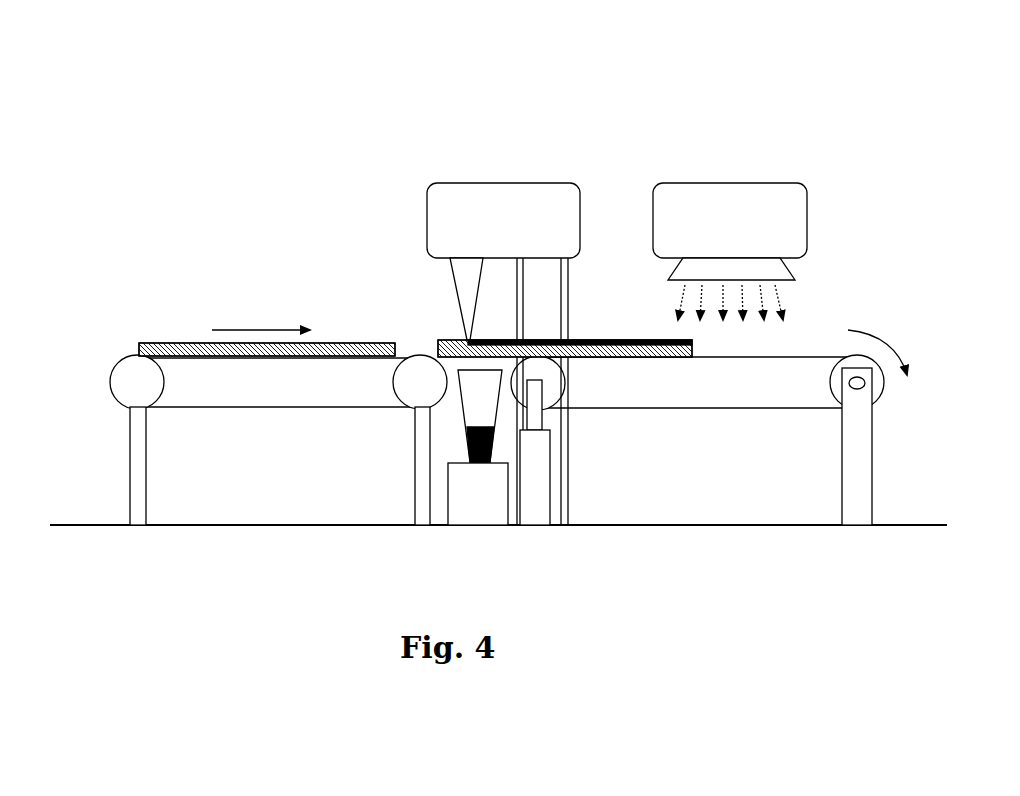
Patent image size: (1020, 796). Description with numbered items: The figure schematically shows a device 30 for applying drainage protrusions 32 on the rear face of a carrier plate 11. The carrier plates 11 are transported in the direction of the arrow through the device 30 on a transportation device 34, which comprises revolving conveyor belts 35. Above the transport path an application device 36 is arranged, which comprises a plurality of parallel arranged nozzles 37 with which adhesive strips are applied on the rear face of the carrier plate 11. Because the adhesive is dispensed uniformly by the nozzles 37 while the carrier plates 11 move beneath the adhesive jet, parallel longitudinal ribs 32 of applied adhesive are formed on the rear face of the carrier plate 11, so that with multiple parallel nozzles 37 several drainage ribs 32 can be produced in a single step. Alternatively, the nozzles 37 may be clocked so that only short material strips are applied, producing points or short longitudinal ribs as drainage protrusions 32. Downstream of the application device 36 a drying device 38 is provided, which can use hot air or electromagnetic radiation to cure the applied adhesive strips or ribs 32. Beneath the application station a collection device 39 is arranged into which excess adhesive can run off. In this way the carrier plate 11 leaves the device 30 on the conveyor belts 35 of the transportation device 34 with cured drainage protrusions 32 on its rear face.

The device 30 is at (257, 166).
The carrier plate 11 is at (192, 343).
The drainage protrusions 32 is at (573, 338).
The transportation device 34 is at (113, 349).
The revolving conveyor belt 35 is at (190, 409).
The application device 36 is at (496, 166).
The nozzle 37 is at (465, 290).
The drying device 38 is at (696, 166).
The collection device 39 is at (473, 410).